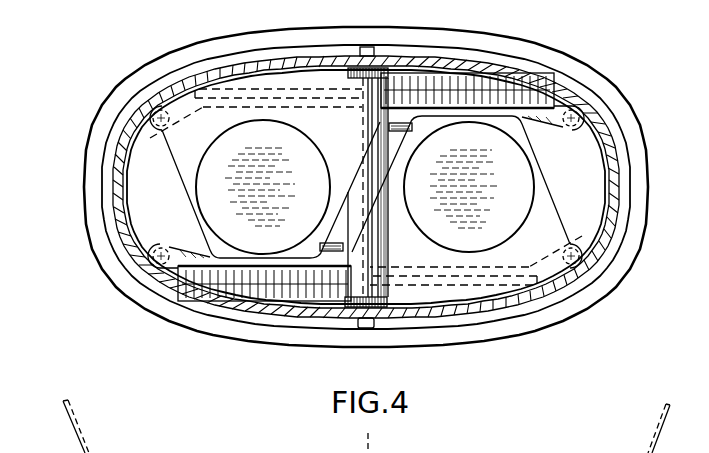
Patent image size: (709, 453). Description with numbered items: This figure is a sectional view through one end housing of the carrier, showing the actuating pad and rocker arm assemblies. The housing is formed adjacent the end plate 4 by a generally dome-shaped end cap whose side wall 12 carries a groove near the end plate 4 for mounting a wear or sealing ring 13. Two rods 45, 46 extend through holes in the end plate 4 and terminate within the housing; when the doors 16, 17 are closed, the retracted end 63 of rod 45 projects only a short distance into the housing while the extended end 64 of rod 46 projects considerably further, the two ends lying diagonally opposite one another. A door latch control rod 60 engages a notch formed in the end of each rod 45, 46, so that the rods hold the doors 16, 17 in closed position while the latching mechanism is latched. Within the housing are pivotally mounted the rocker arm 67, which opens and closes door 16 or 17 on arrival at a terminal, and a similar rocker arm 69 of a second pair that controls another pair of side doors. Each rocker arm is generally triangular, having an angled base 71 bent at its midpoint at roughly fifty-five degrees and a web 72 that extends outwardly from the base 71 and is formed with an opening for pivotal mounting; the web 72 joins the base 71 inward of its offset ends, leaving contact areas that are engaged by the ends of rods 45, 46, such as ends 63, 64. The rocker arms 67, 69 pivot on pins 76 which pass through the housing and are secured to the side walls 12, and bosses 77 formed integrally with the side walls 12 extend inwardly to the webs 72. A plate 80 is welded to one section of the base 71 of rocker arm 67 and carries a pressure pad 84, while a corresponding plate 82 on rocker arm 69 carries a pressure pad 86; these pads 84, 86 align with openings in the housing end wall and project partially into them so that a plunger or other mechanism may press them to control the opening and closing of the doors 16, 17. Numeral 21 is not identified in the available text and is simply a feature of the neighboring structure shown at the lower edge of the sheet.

The end plate 4 is at (157, 195).
The side wall 12 is at (620, 236).
The wear or sealing ring 13 is at (646, 165).
The door 16 is at (90, 443).
The door 17 is at (678, 452).
The base member 21 is at (380, 452).
The rod 45 is at (602, 110).
The rod 46 is at (150, 138).
The door latch control rod 60 is at (582, 124).
The retracted end 63 is at (585, 110).
The extended end 64 is at (152, 102).
The rocker arm 67 is at (240, 84).
The rocker arm 69 is at (500, 287).
The angled base 71 is at (490, 80).
The web 72 is at (549, 61).
The pin 76 is at (377, 50).
The boss 77 is at (368, 183).
The plate 80 is at (187, 153).
The plate 82 is at (545, 185).
The pressure pad 84 is at (220, 200).
The pressure pad 86 is at (512, 210).